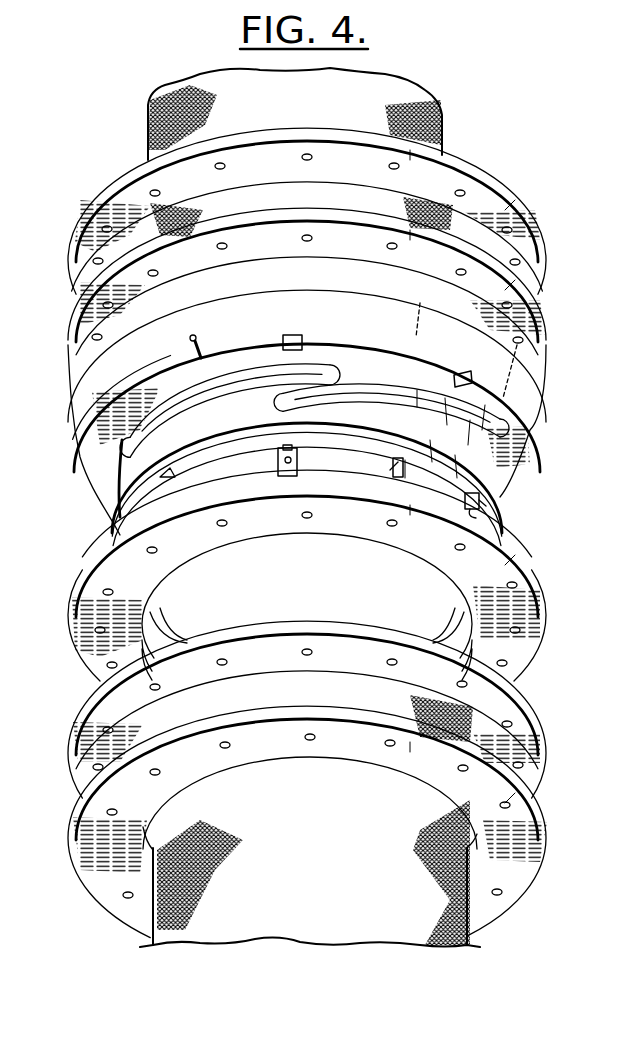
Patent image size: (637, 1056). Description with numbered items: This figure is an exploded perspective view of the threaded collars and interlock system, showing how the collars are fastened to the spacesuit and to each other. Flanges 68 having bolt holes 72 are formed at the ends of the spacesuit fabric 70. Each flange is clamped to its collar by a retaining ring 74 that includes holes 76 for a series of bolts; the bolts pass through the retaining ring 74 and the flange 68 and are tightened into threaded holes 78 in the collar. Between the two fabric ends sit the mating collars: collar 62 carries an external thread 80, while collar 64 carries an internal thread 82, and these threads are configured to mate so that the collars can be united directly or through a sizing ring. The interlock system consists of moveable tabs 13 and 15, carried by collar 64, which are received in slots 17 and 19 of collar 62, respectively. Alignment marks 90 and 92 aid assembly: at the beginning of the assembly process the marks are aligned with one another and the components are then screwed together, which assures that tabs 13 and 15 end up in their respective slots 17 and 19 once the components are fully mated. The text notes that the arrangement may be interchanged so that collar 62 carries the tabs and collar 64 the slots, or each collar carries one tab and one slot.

The moveable tab 13 is at (481, 507).
The moveable tab 15 is at (272, 480).
The slot 17 is at (468, 373).
The slot 19 is at (302, 338).
The collar 62 is at (522, 399).
The collar 64 is at (527, 558).
The flange 68 is at (70, 318).
The spacesuit fabric 70 is at (150, 117).
The bolt holes 72 is at (160, 274).
The retaining ring 74 is at (100, 190).
The holes 76 is at (306, 161).
The threaded holes 78 is at (219, 523).
The external thread 80 is at (497, 472).
The internal thread 82 is at (167, 618).
The alignment mark 90 is at (203, 350).
The alignment mark 92 is at (393, 465).